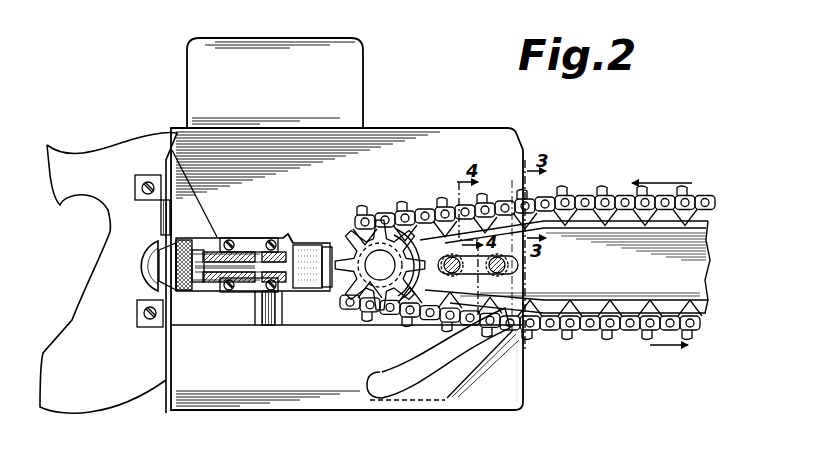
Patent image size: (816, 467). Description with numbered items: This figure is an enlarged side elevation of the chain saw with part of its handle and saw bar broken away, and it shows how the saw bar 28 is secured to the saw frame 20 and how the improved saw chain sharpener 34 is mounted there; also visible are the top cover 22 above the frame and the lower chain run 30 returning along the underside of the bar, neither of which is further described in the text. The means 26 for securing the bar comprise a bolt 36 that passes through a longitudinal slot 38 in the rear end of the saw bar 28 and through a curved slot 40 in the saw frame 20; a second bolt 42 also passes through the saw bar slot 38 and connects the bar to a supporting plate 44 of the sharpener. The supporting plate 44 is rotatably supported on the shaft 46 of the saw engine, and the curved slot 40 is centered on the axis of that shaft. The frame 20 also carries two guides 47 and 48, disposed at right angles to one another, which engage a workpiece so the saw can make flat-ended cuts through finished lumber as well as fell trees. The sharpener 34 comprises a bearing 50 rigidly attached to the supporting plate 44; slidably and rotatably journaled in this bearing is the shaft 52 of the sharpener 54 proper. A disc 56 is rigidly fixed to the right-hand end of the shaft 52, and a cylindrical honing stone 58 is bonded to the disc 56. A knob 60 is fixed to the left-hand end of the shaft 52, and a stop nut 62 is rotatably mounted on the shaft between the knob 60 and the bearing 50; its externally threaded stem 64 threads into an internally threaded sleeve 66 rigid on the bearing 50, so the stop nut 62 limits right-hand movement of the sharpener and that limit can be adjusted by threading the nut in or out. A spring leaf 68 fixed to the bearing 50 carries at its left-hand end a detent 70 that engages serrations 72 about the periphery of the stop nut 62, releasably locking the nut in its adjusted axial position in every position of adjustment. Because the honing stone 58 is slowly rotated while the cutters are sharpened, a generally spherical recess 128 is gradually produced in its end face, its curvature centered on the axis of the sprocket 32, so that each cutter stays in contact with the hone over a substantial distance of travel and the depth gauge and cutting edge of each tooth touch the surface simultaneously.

The saw frame 20 is at (367, 99).
The top cover 22 is at (366, 46).
The means for securing the saw bar 26 is at (552, 200).
The saw bar 28 is at (675, 222).
The chain return run 30 is at (645, 337).
The sprocket 32 is at (373, 300).
The saw chain sharpener 34 is at (296, 232).
The bolt 36 is at (512, 268).
The longitudinal slot 38 is at (420, 293).
The curved slot 40 is at (385, 392).
The bolt 42 is at (451, 258).
The supporting plate 44 is at (285, 295).
The shaft 46 is at (415, 212).
The guide 47 is at (528, 380).
The guide 48 is at (472, 410).
The bearing 50 is at (262, 283).
The shaft 52 is at (262, 250).
The saw chain sharpener proper 54 is at (306, 247).
The disc 56 is at (280, 296).
The honing stone 58 is at (314, 292).
The knob 60 is at (136, 278).
The stop nut 62 is at (182, 290).
The externally threaded stem 64 is at (196, 250).
The internally threaded sleeve 66 is at (215, 283).
The spring leaf 68 is at (230, 237).
The detent 70 is at (166, 238).
The serrations 72 is at (165, 282).
The spherical recess 128 is at (366, 214).